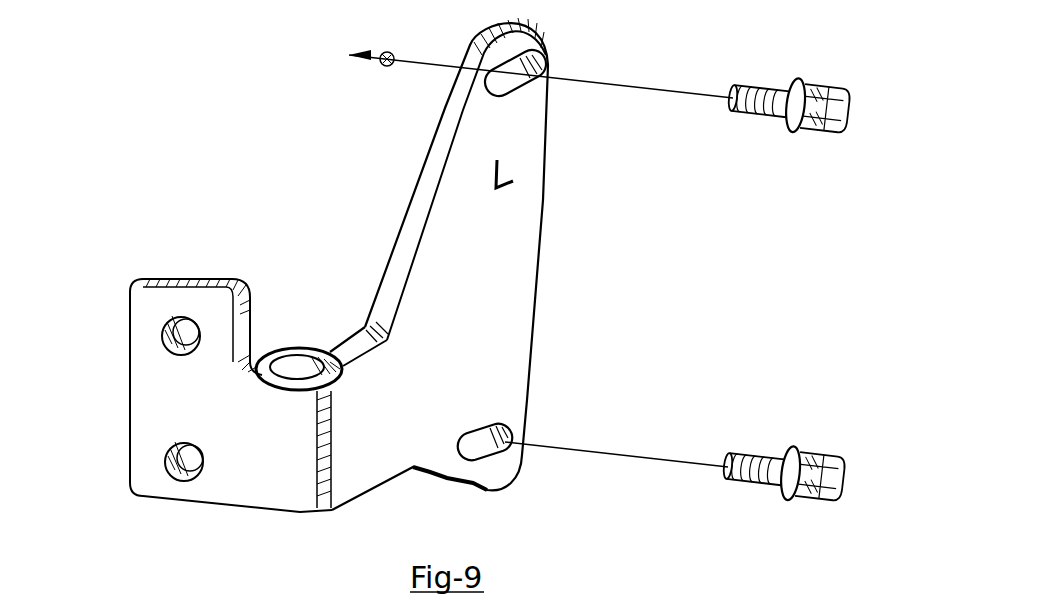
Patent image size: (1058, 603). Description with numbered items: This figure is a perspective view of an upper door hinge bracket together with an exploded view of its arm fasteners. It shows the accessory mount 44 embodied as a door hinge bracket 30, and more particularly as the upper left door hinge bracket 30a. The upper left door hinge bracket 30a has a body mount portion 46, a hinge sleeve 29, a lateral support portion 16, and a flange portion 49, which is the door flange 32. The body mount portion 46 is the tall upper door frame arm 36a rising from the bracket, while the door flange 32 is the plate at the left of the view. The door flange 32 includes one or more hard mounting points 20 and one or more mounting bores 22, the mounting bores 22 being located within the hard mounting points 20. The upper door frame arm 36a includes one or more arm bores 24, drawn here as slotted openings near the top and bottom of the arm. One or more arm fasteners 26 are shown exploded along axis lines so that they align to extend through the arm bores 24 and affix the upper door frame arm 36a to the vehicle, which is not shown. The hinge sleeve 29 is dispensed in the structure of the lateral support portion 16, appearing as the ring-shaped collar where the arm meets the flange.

The lateral support portion 16 is at (302, 452).
The hard mounting points 20 is at (188, 413).
The mounting bores 22 is at (168, 460).
The arm bores 24 is at (522, 68).
The arm fasteners 26 is at (765, 92).
The hinge sleeve 29 is at (263, 361).
The door hinge bracket 30 is at (490, 259).
The upper left door hinge bracket 30a is at (490, 259).
The door flange 32 is at (187, 381).
The upper door frame arm 36a is at (432, 264).
The accessory mount 44 is at (243, 178).
The body mount portion 46 is at (493, 303).
The flange portion 49 is at (110, 334).